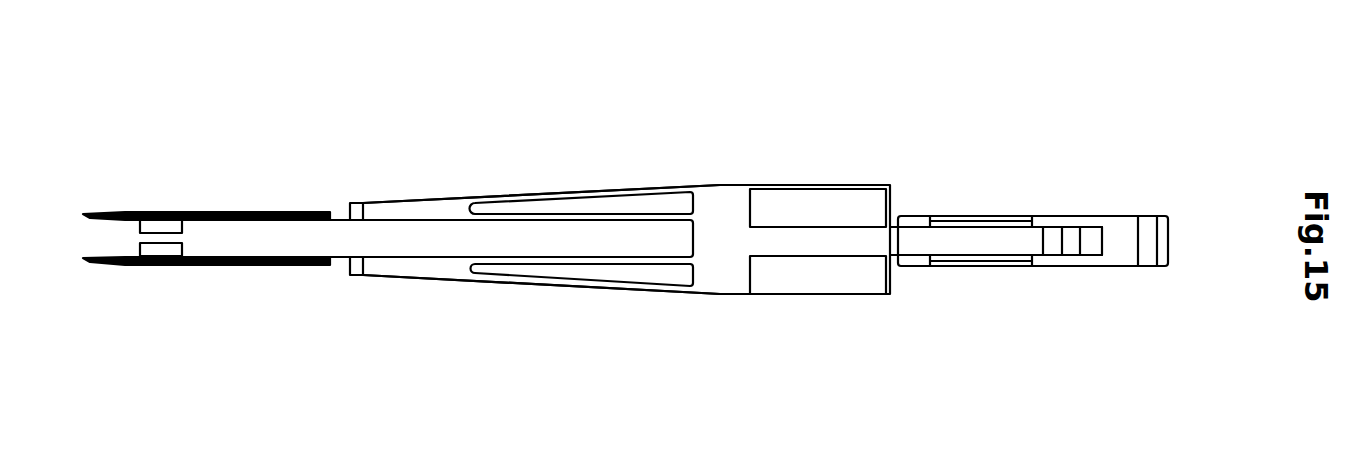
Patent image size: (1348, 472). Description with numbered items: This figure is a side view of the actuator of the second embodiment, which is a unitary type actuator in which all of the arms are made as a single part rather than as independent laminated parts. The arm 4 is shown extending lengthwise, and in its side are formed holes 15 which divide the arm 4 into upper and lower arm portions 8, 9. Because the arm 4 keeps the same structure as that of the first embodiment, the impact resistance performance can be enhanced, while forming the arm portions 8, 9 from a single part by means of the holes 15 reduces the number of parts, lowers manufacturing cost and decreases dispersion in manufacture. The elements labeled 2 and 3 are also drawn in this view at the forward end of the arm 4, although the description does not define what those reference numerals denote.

The positioning projection 2 is at (165, 228).
The fiber holding member 3 is at (278, 213).
The arm 4 is at (442, 190).
The arm portion 8 is at (543, 193).
The arm portion 9 is at (626, 214).
The hole 15 is at (643, 203).